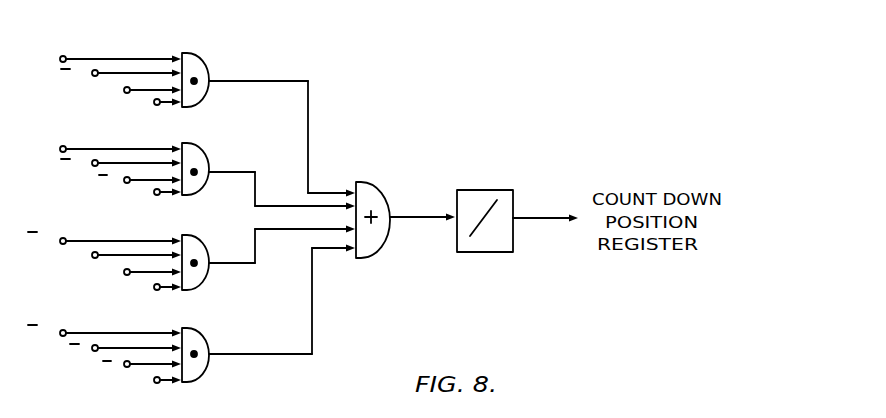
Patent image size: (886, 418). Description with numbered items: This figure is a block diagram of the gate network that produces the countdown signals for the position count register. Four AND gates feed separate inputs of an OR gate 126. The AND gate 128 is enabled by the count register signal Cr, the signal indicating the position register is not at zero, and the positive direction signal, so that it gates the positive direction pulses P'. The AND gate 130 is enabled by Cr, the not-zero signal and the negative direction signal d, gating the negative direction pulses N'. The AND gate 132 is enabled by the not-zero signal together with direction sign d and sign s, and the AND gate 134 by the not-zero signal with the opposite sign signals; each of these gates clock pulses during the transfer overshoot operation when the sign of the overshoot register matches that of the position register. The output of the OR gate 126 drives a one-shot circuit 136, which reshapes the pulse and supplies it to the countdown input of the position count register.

The OR gate 126 is at (374, 189).
The AND gate 128 is at (196, 63).
The AND gate 130 is at (199, 155).
The AND gate 132 is at (200, 250).
The AND gate 134 is at (199, 340).
The one-shot circuit 136 is at (500, 192).